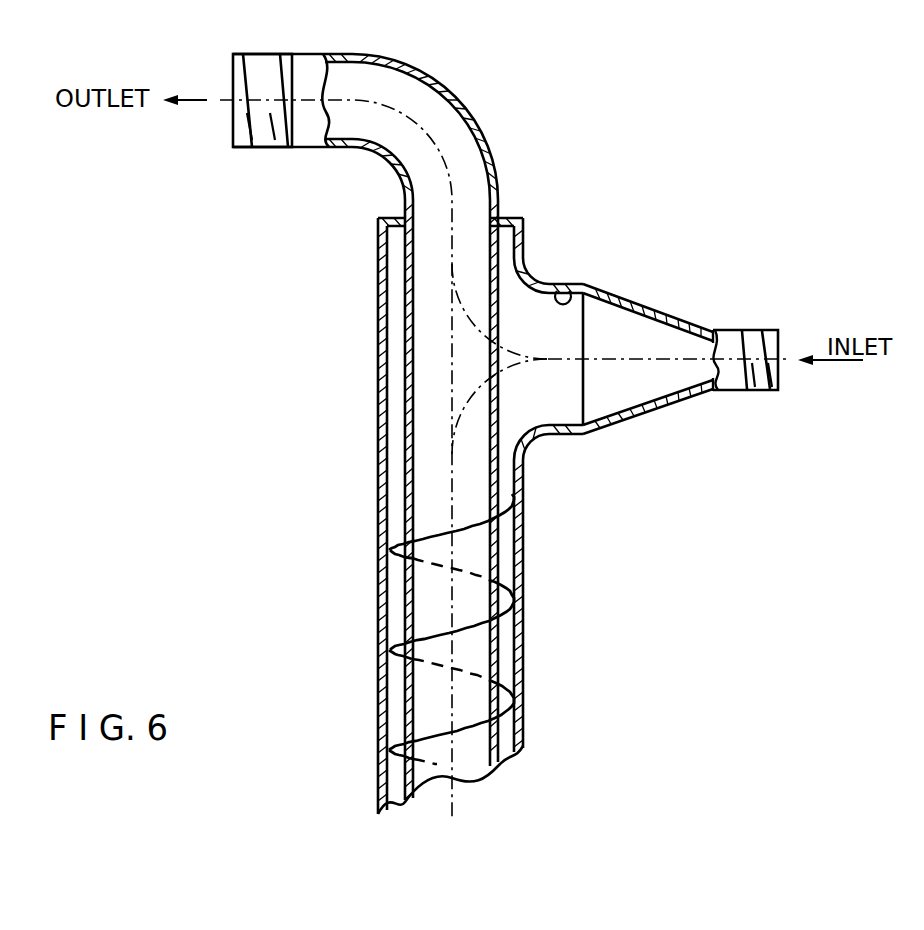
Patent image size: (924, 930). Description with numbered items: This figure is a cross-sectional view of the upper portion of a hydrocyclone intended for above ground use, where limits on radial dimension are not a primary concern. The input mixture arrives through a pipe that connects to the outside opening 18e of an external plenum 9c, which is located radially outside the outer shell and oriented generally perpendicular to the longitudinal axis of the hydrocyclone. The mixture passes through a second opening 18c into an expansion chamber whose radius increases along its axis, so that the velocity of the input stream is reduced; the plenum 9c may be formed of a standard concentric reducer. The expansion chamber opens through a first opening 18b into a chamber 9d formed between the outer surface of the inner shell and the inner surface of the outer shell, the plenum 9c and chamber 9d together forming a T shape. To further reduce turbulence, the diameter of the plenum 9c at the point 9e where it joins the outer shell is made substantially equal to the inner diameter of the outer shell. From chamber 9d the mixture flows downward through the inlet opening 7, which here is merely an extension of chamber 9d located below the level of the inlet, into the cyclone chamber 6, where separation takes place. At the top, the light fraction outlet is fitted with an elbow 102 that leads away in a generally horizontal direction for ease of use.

The elbow 102 is at (427, 110).
The inlet opening 7 is at (398, 462).
The chamber 9d is at (400, 297).
The cyclone chamber 6 is at (397, 612).
The plenum 9c is at (595, 322).
The point where plenum meets chamber 9e is at (571, 290).
The second opening 18c is at (711, 393).
The outside opening 18e is at (780, 347).
The first opening 18b is at (555, 374).